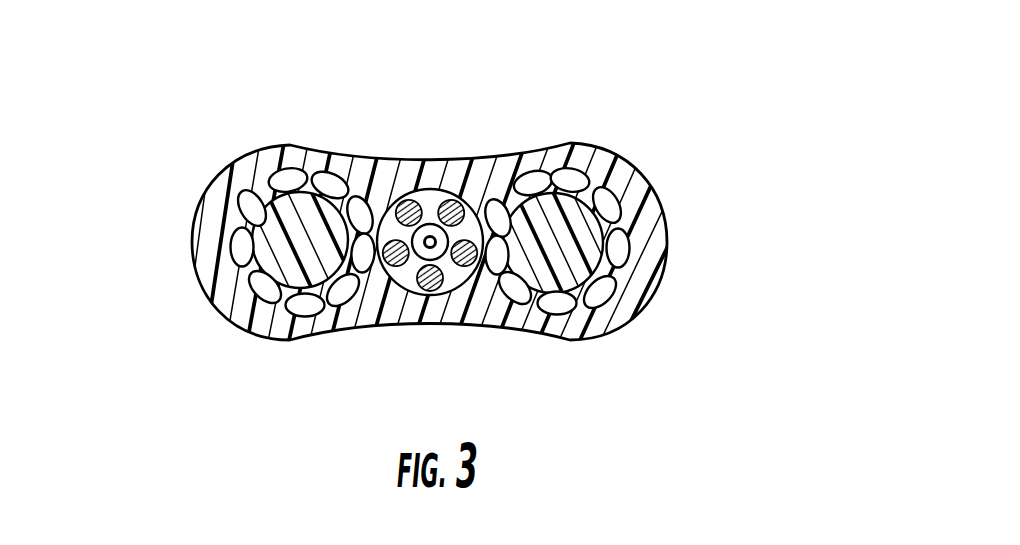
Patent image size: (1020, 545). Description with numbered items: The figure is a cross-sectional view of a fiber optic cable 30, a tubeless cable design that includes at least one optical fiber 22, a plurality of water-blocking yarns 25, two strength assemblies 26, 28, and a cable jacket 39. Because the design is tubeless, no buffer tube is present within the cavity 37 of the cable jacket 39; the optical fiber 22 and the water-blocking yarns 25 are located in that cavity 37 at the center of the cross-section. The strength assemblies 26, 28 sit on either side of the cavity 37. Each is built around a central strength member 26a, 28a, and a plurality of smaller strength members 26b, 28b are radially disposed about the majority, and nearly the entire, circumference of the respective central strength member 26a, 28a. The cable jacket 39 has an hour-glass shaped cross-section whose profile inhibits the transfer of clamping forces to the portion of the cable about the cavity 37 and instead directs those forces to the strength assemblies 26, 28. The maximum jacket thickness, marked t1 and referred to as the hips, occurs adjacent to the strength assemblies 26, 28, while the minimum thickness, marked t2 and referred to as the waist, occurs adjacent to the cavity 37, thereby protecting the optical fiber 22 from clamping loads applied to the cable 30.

The fiber optic cable 30 is at (441, 224).
The optical fiber 22 is at (485, 236).
The water-blocking yarns 25 is at (412, 200).
The strength assembly 26 is at (692, 239).
The strength member 26a is at (593, 233).
The strength members 26b is at (600, 293).
The strength assembly 28 is at (195, 240).
The strength member 28a is at (293, 230).
The strength members 28b is at (258, 285).
The cavity 37 is at (482, 212).
The cable jacket 39 is at (585, 322).
The jacket thickness at lobe t1 is at (290, 410).
The jacket thickness at waist t2 is at (423, 393).